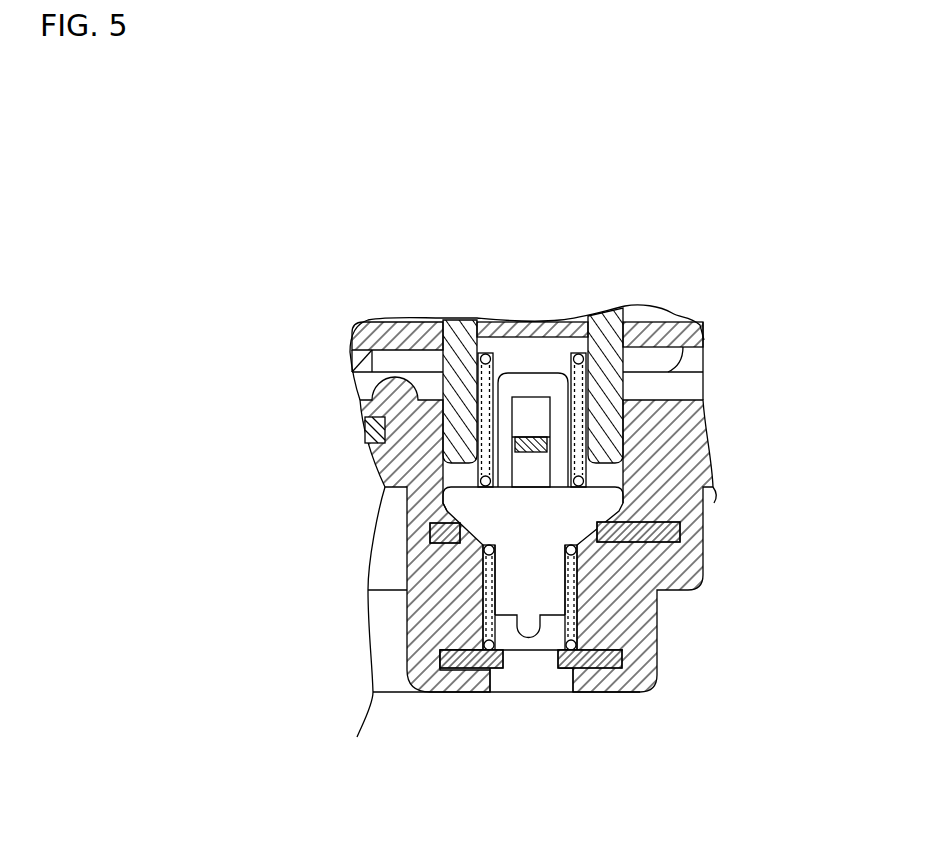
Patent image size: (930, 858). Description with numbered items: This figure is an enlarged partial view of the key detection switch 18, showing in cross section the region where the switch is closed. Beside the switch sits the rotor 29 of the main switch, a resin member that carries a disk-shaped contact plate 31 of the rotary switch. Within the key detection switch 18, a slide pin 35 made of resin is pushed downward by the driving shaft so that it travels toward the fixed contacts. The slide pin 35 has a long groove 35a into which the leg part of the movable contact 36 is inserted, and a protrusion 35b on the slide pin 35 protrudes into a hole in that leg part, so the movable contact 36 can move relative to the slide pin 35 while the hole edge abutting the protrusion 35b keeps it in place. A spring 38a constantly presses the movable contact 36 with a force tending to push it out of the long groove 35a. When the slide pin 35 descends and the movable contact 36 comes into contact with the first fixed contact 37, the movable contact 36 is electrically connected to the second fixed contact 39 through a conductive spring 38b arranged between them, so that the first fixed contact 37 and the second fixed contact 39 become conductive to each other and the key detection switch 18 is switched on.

The key detection switch 18 is at (410, 305).
The rotor 29 is at (603, 445).
The contact plate 31 is at (653, 333).
The slide pin 35 is at (572, 325).
The long groove 35a is at (527, 352).
The protrusion 35b is at (525, 450).
The movable contact 36 is at (522, 592).
The first fixed contact 37 is at (643, 515).
The spring 38a is at (483, 433).
The conductive spring 38b is at (583, 580).
The second fixed contact 39 is at (620, 641).